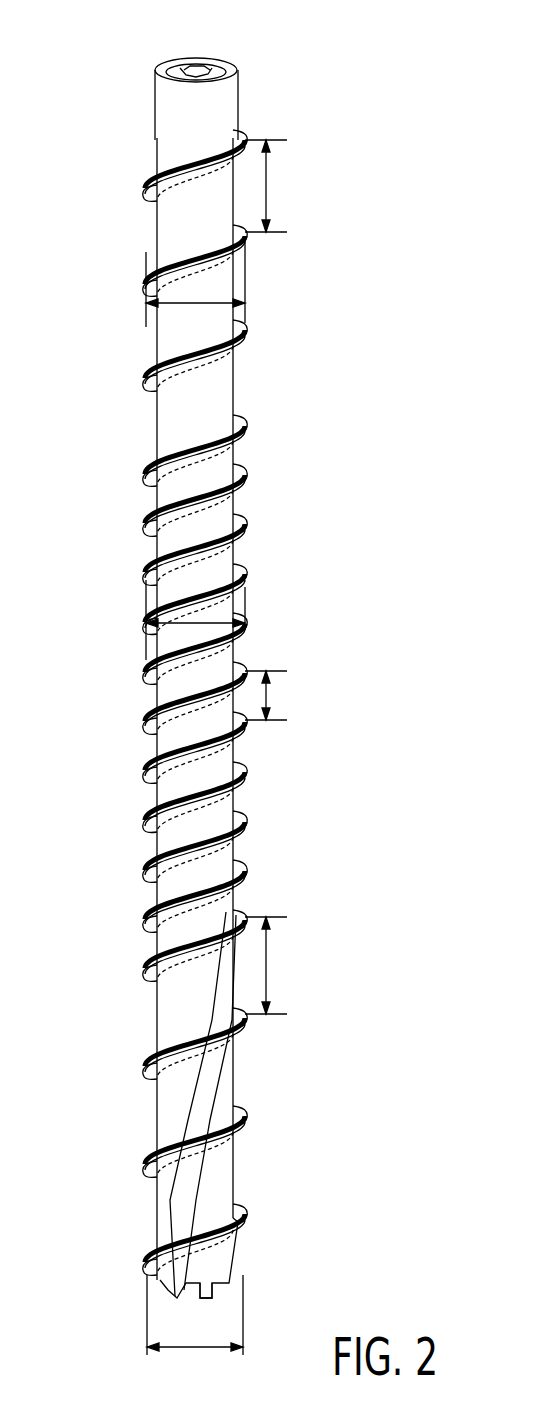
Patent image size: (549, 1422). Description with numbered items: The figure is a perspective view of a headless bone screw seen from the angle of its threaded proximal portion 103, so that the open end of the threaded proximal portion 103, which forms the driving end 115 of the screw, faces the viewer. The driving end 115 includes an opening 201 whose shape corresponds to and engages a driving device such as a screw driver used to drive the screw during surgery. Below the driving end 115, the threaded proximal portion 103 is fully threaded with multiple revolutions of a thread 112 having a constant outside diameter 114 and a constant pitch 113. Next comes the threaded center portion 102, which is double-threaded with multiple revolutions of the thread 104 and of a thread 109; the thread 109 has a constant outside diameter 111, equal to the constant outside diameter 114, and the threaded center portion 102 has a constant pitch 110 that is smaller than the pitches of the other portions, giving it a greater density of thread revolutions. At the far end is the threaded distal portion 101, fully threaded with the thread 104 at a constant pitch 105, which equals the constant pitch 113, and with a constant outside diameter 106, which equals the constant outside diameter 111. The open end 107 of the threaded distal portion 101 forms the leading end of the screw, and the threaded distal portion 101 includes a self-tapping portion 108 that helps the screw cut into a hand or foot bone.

The threaded distal portion 101 is at (372, 1084).
The threaded center portion 102 is at (372, 744).
The threaded proximal portion 103 is at (372, 271).
The thread 104 is at (148, 483).
The constant pitch 105 is at (268, 968).
The constant outside diameter 106 is at (200, 1349).
The open end 107 is at (203, 1285).
The self-tapping portion 108 is at (173, 1222).
The thread 109 is at (240, 820).
The constant pitch 110 is at (268, 697).
The constant outside diameter 111 is at (182, 622).
The thread 112 is at (242, 138).
The constant pitch 113 is at (268, 187).
The constant outside diameter 114 is at (182, 302).
The driving end 115 is at (233, 63).
The opening 201 is at (190, 63).